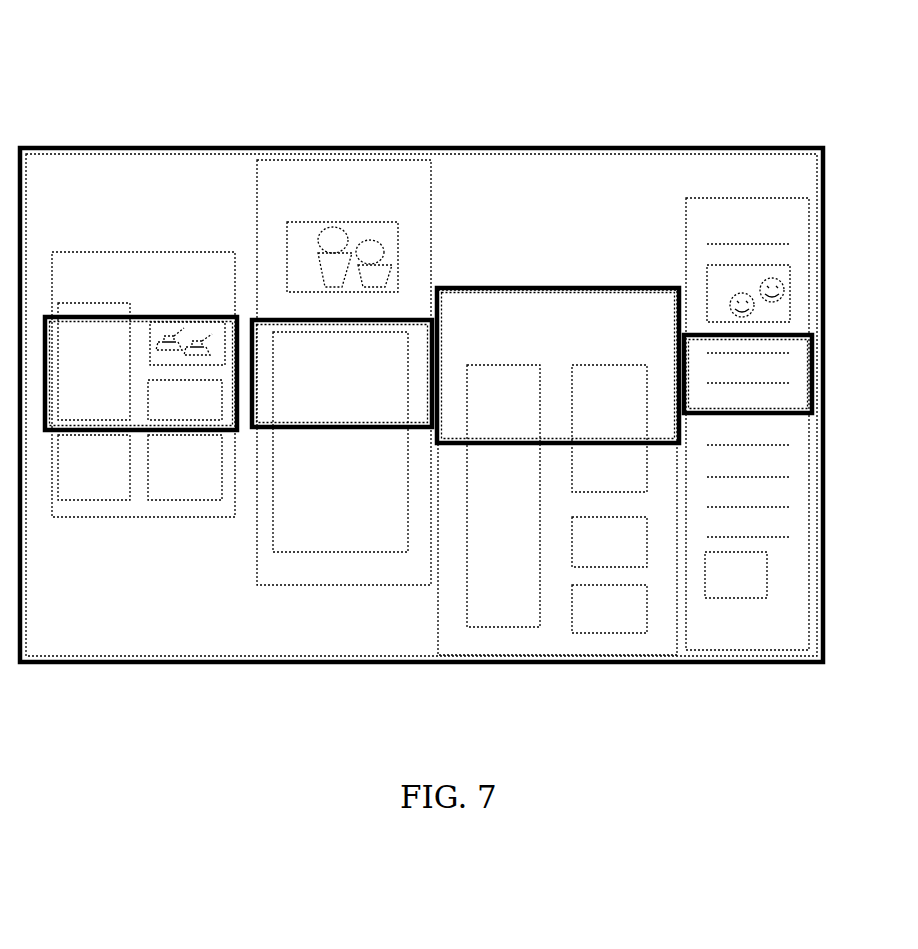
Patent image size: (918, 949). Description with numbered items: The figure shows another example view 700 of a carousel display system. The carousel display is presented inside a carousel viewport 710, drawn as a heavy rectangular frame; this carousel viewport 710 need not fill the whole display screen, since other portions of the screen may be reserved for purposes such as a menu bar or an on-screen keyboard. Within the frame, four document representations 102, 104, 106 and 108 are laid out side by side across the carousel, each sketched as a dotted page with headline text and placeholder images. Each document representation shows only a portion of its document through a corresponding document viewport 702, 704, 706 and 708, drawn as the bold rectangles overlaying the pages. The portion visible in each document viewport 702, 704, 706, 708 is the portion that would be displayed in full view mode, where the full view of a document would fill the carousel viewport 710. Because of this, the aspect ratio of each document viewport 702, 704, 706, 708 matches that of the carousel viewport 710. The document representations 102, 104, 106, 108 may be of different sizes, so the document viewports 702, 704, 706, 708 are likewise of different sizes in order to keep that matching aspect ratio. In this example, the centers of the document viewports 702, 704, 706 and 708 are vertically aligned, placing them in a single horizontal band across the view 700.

The example view 700 is at (132, 82).
The carousel viewport 710 is at (525, 146).
The document viewport 702 is at (57, 312).
The document representation 102 is at (162, 292).
The document representation 104 is at (357, 196).
The document viewport 704 is at (408, 314).
The document representation 106 is at (573, 318).
The document viewport 706 is at (645, 286).
The document representation 108 is at (779, 212).
The document viewport 708 is at (718, 332).